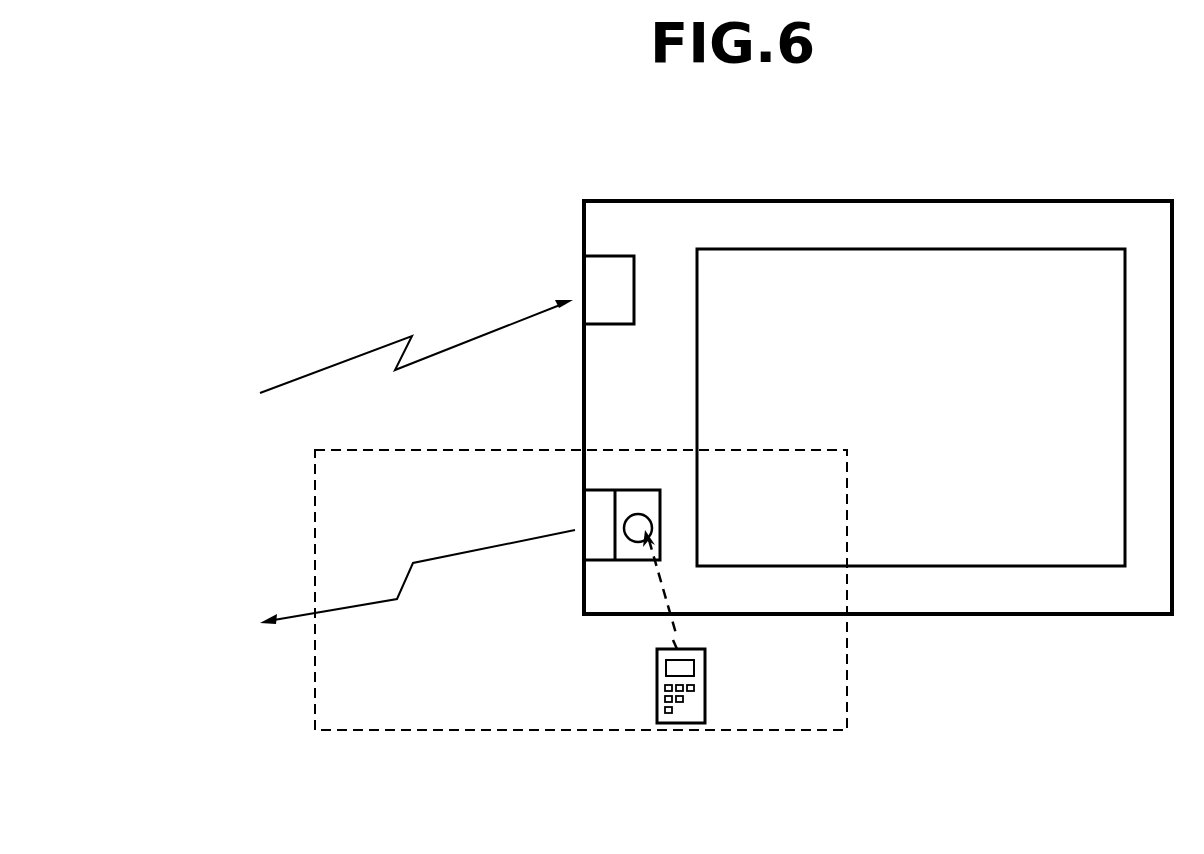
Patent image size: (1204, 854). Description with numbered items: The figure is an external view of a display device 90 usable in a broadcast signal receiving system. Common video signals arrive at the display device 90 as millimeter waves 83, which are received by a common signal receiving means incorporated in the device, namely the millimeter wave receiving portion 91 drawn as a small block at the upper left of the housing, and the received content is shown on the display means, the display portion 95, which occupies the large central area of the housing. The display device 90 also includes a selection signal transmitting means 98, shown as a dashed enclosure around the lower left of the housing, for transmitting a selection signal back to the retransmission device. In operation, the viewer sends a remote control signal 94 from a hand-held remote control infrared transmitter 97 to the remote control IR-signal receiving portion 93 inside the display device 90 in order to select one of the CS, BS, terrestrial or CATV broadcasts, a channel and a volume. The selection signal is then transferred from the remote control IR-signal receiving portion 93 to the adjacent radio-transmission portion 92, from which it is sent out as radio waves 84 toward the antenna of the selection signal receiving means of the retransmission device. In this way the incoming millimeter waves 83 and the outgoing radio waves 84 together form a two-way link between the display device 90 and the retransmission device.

The millimeter waves 83 is at (393, 362).
The radio waves 84 is at (397, 593).
The display device 90 is at (913, 215).
The millimeter wave receiving portion 91 is at (598, 290).
The radio-transmission portion 92 is at (582, 556).
The remote control IR-signal receiving portion 93 is at (649, 516).
The remote control signal 94 is at (672, 632).
The display portion 95 is at (1072, 257).
The remote control infrared transmitter 97 is at (704, 697).
The selection signal transmitting means 98 is at (457, 733).